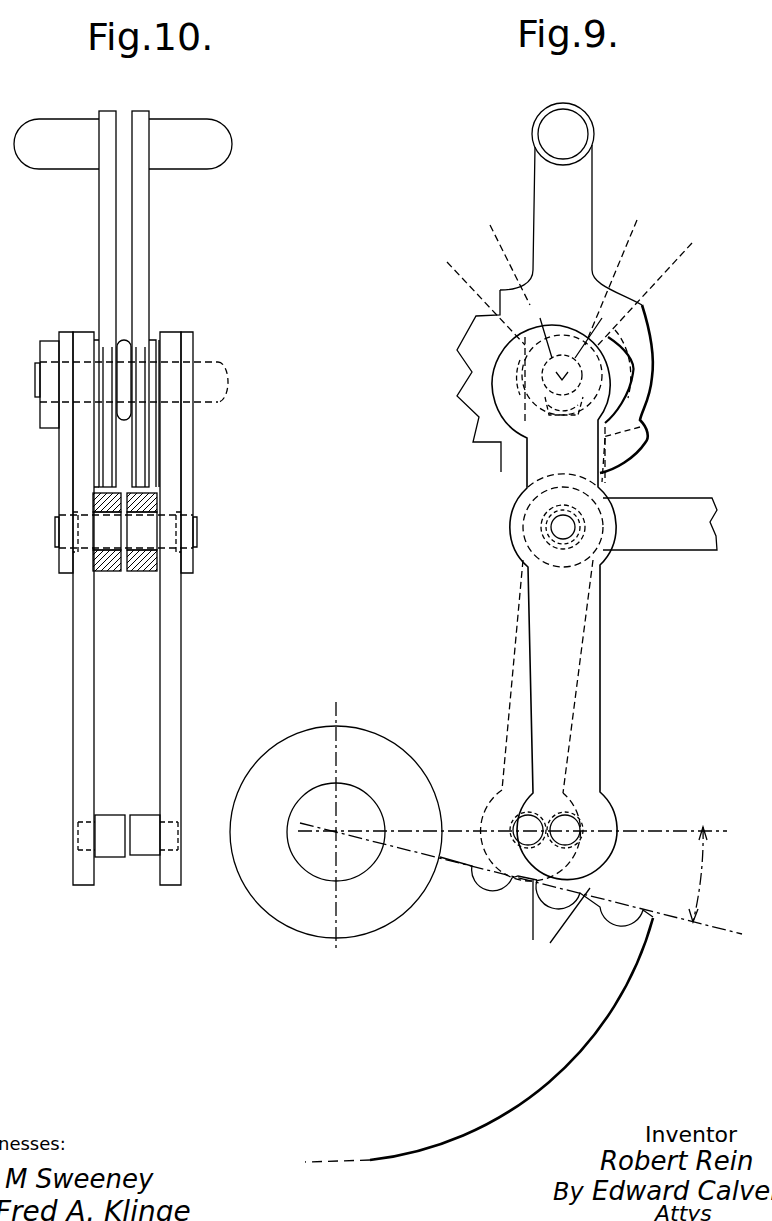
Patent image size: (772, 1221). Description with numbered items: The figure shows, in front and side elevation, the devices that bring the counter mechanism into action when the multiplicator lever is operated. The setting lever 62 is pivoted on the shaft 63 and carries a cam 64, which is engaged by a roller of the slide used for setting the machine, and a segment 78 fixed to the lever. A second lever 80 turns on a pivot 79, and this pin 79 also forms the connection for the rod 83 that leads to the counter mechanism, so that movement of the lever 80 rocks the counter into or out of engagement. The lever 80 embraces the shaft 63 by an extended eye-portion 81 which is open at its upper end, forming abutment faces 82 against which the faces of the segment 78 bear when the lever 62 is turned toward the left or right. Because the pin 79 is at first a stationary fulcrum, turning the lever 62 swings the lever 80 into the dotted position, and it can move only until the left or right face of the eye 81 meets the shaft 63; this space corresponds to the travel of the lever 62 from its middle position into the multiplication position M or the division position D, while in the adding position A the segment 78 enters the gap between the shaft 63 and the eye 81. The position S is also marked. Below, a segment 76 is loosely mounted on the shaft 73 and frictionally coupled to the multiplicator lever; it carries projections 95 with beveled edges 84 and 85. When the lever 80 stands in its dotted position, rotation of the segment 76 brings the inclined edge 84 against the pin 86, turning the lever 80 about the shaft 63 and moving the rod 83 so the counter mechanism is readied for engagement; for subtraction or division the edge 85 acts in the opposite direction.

In FIG. 10, the lever 62 is at (106, 210).
In FIG. 9, the lever 62 is at (575, 183).
In FIG. 10, the shaft 63 is at (207, 363).
In FIG. 9, the shaft 63 is at (562, 390).
In FIG. 10, the cam 64 is at (110, 457).
In FIG. 9, the cam 64 is at (515, 453).
In FIG. 9, the shaft 73 is at (352, 870).
In FIG. 9, the segment 76 is at (587, 1025).
In FIG. 9, the segment 78 is at (556, 333).
In FIG. 10, the pivot 79 is at (193, 538).
In FIG. 9, the pivot 79 is at (558, 532).
In FIG. 10, the lever 80 is at (87, 673).
In FIG. 9, the lever 80 is at (517, 666).
In FIG. 9, the extended eye-portion 81 is at (523, 385).
In FIG. 9, the abutment faces 82 is at (575, 355).
In FIG. 10, the rod 83 is at (112, 570).
In FIG. 9, the rod 83 is at (655, 543).
In FIG. 9, the beveled edge 84 is at (507, 893).
In FIG. 9, the inclined edge 85 is at (600, 882).
In FIG. 10, the pin 86 is at (140, 825).
In FIG. 9, the pin 86 is at (528, 823).
In FIG. 9, the projections 95 is at (561, 926).
In FIG. 9, the division position D is at (504, 253).
In FIG. 9, the position S is at (477, 295).
In FIG. 9, the multiplication position M is at (616, 271).
In FIG. 9, the addition position A is at (650, 282).